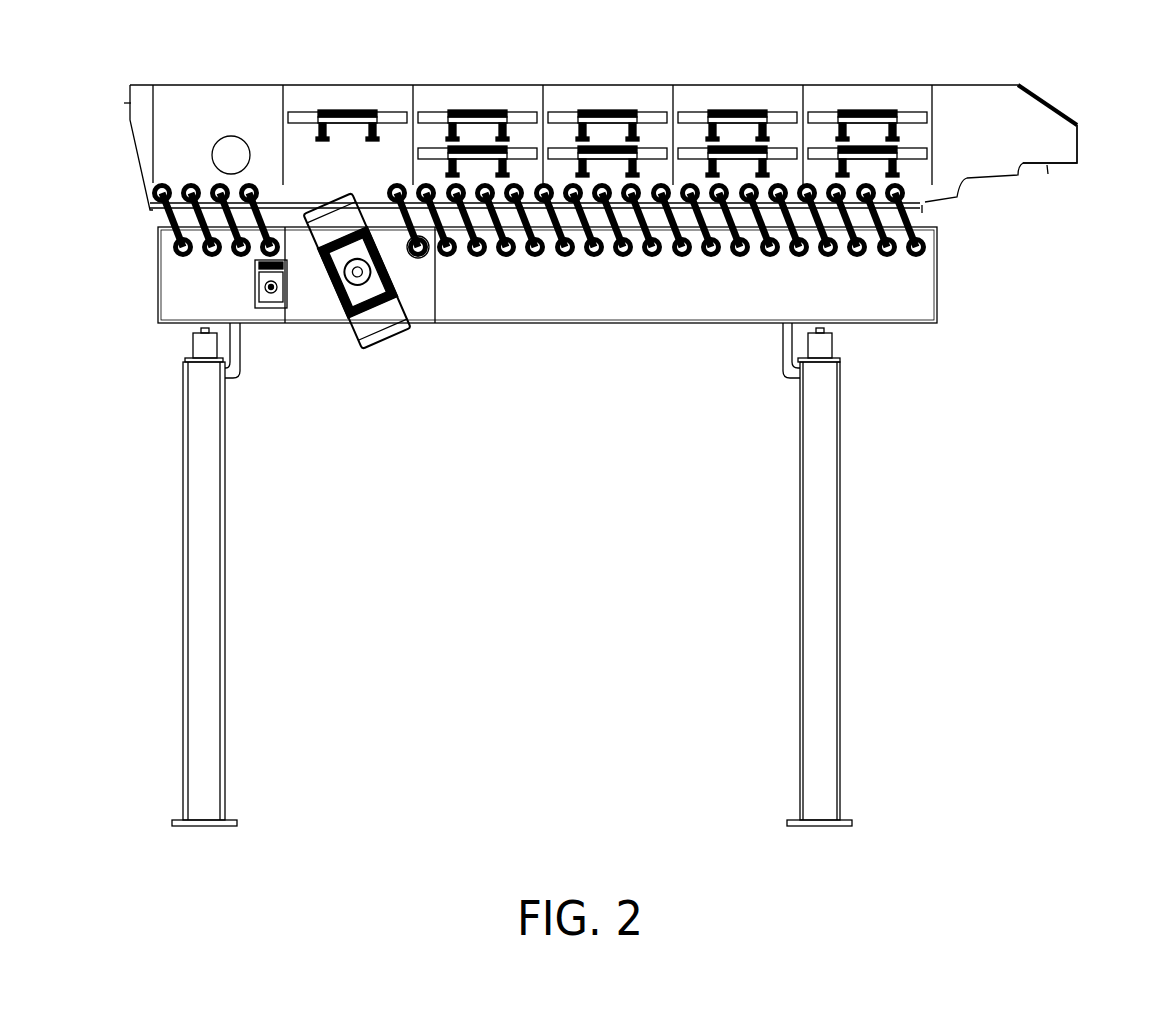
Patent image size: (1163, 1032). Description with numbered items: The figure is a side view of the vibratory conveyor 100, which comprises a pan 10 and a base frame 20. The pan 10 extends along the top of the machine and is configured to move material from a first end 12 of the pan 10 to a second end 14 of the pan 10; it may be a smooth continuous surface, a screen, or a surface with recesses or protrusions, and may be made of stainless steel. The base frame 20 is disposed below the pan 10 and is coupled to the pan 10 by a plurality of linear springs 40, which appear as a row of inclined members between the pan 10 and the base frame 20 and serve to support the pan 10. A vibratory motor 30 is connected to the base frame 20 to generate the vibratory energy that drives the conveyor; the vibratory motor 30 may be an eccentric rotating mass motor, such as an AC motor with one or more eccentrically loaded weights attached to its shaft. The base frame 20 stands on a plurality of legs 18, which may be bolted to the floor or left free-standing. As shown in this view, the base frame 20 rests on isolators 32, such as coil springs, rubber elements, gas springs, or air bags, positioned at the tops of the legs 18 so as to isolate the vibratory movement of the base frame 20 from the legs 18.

The vibratory conveyor 100 is at (1028, 62).
The pan 10 is at (508, 84).
The first end 12 is at (130, 120).
The second end 14 is at (1078, 134).
The legs 18 is at (223, 662).
The base frame 20 is at (172, 289).
The vibratory motor 30 is at (400, 348).
The isolators 32 is at (195, 338).
The linear springs 40 is at (660, 275).